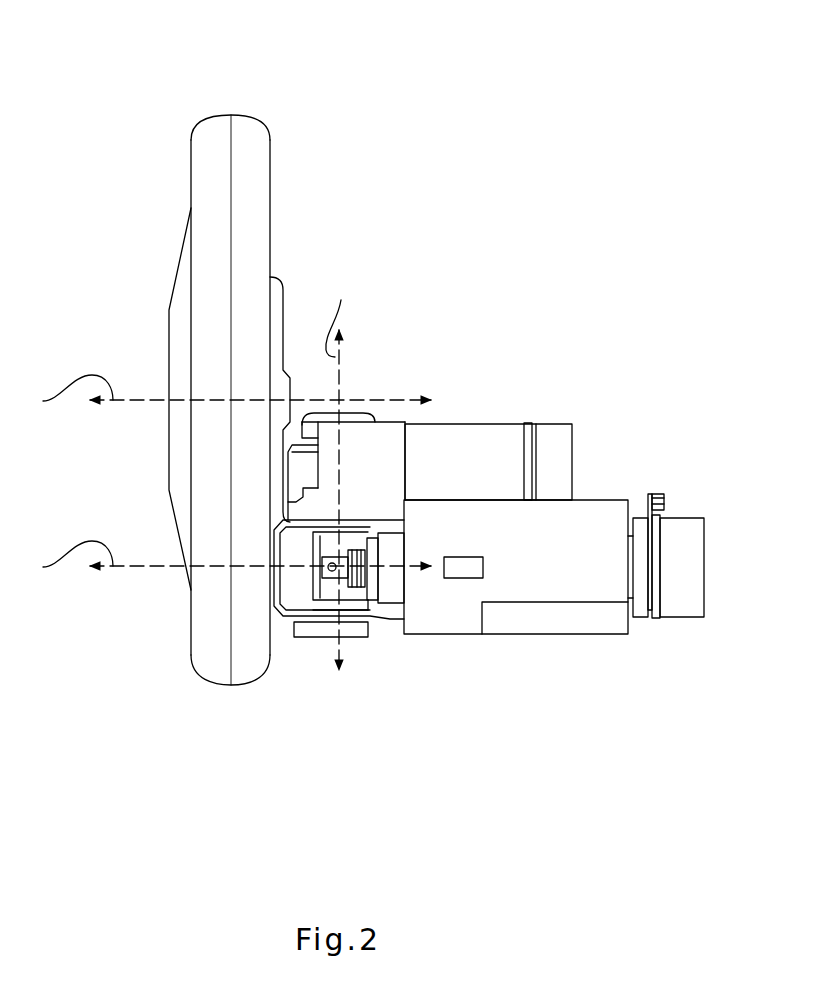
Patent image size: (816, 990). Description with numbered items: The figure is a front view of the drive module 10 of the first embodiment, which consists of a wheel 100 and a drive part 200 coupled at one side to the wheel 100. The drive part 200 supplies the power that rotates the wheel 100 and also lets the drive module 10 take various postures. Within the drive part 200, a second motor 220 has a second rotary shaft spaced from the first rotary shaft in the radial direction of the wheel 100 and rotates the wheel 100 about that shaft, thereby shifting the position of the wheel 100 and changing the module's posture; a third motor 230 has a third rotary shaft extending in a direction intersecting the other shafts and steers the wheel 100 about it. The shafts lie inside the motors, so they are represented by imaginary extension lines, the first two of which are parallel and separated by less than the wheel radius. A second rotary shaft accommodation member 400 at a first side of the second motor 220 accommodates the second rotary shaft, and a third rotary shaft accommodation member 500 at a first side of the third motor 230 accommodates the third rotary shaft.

The drive module 10 is at (62, 25).
The wheel 100 is at (231, 100).
The drive part 200 is at (496, 496).
The second motor 220 is at (550, 582).
The third motor 230 is at (476, 445).
The second rotary shaft accommodation member 400 is at (392, 604).
The third rotary shaft accommodation member 500 is at (383, 440).